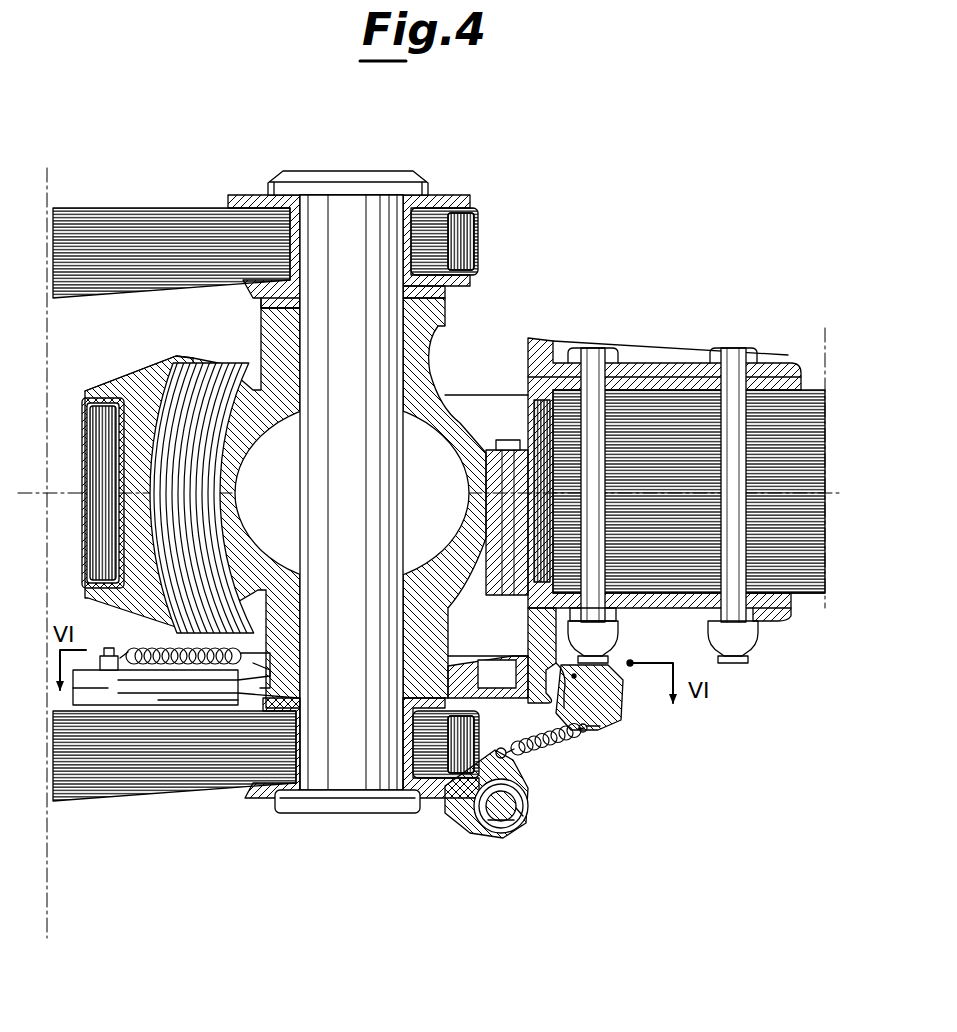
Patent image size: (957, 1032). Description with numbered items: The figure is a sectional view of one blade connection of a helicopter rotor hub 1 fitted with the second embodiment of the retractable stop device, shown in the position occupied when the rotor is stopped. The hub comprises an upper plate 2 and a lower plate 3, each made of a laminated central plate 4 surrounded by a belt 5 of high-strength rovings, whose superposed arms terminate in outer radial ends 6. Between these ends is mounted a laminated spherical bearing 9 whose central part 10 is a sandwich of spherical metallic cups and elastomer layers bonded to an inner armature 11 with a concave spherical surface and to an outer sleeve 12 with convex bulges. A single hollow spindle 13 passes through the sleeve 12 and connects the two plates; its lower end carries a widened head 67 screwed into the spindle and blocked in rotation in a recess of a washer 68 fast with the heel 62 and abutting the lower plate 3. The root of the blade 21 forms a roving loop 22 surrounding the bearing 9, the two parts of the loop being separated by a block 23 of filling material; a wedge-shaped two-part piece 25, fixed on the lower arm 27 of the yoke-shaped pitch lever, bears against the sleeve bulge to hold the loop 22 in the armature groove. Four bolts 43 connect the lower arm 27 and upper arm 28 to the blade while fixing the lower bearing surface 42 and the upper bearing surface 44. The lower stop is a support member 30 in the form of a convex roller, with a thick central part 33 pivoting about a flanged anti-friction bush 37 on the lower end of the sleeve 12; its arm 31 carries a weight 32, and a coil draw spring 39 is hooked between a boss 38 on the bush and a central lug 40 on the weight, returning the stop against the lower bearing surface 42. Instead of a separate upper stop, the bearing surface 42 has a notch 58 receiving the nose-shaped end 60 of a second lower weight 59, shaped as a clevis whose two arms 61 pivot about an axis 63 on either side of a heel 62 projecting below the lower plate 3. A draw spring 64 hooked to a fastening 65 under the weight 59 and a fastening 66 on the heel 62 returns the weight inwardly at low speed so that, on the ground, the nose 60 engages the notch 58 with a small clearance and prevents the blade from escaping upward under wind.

The hub 1 is at (155, 165).
The upper plate 2 is at (97, 238).
The lower plate 3 is at (100, 795).
The laminated central plate 4 is at (110, 748).
The belt of rovings 5 is at (530, 787).
The outer radial end 6 is at (430, 750).
The laminated spherical bearing 9 is at (92, 375).
The central part 10 is at (205, 395).
The inner armature 11 is at (130, 378).
The sleeve 12 is at (420, 352).
The spindle 13 is at (345, 215).
The blade 21 is at (801, 590).
The roving loop 22 is at (97, 452).
The block of filling material 23 is at (797, 412).
The two-part piece 25 is at (477, 473).
The lower arm 27 is at (770, 600).
The upper arm 28 is at (748, 365).
The support member 30 is at (482, 680).
The arm 31 is at (190, 700).
The weight 32 is at (70, 690).
The thick central part 33 is at (455, 648).
The flanged anti-friction bush 37 is at (262, 667).
The boss 38 is at (245, 647).
The coil draw spring 39 is at (150, 645).
The central lug 40 is at (95, 640).
The lower bearing surface 42 is at (575, 724).
The bolts 43 is at (588, 415).
The upper bearing surface 44 is at (532, 345).
The notch 58 is at (535, 660).
The second lower weight 59 is at (605, 700).
The nose-shaped end 60 is at (566, 668).
The arms 61 is at (515, 795).
The heel 62 is at (505, 825).
The axis 63 is at (510, 810).
The draw spring 64 is at (530, 768).
The fastening 65 is at (592, 720).
The fastening 66 is at (494, 740).
The widened head 67 is at (355, 800).
The washer 68 is at (250, 792).